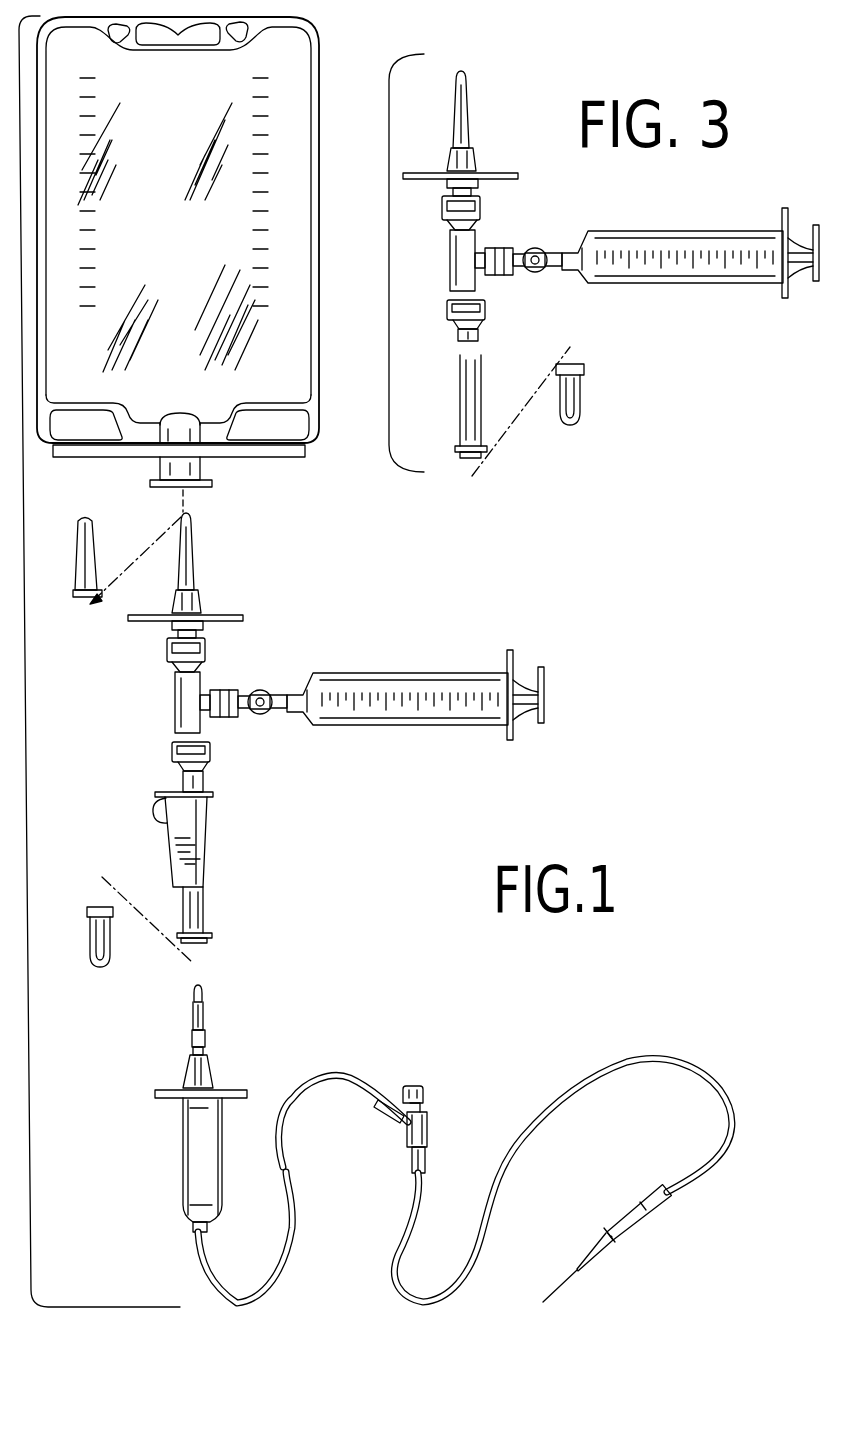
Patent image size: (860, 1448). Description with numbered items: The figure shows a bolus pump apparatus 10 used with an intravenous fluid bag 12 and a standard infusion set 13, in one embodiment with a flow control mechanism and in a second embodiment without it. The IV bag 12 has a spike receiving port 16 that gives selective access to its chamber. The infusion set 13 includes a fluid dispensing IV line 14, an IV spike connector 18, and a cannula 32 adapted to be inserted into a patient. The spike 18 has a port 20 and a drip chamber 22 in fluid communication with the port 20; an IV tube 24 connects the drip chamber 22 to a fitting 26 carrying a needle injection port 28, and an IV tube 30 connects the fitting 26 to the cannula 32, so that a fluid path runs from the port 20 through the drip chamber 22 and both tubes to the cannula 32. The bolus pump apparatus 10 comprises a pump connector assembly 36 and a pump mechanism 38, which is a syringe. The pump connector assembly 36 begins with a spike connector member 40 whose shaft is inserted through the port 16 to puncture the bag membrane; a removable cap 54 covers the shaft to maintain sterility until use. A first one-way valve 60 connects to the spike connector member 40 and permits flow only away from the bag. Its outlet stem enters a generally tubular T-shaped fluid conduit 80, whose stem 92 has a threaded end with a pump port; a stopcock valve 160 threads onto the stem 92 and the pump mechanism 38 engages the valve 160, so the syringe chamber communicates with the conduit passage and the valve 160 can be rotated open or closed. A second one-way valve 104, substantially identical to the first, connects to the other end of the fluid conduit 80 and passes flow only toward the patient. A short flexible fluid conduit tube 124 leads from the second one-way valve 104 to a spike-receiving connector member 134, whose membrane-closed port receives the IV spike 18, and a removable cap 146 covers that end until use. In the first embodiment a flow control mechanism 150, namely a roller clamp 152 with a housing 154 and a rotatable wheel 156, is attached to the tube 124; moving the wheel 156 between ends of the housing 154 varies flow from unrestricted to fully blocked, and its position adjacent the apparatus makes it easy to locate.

In FIG. 1, the bolus pump apparatus 10 is at (297, 776).
In FIG. 3, the bolus pump apparatus 10 is at (597, 318).
In FIG. 1, the IV fluid bag 12 is at (318, 256).
In FIG. 1, the infusion set 13 is at (487, 1050).
In FIG. 1, the fluid dispensing IV line 14 is at (497, 1100).
In FIG. 1, the spike receiving port 16 is at (211, 483).
In FIG. 1, the IV spike connector 18 is at (227, 1036).
In FIG. 1, the port 20 is at (203, 990).
In FIG. 1, the drip chamber 22 is at (183, 1179).
In FIG. 1, the IV tube 24 is at (289, 1141).
In FIG. 1, the fitting 26 is at (428, 1121).
In FIG. 1, the needle injection port 28 is at (416, 1083).
In FIG. 1, the IV tube 30 is at (540, 1136).
In FIG. 1, the cannula 32 is at (602, 1262).
In FIG. 1, the pump connector assembly 36 is at (122, 666).
In FIG. 1, the pump mechanism 38 is at (375, 727).
In FIG. 3, the pump mechanism 38 is at (682, 285).
In FIG. 1, the spike connector member 40 is at (202, 605).
In FIG. 3, the spike connector member 40 is at (470, 112).
In FIG. 1, the removable cap 54 is at (76, 560).
In FIG. 1, the first one-way valve 60 is at (168, 647).
In FIG. 3, the first one-way valve 60 is at (446, 207).
In FIG. 1, the fluid conduit 80 is at (175, 697).
In FIG. 3, the fluid conduit 80 is at (456, 264).
In FIG. 1, the stem 92 is at (204, 710).
In FIG. 1, the second one-way valve 104 is at (172, 748).
In FIG. 3, the second one-way valve 104 is at (451, 316).
In FIG. 1, the fluid conduit tube 124 is at (206, 908).
In FIG. 1, the spike-receiving connector member 134 is at (212, 938).
In FIG. 3, the spike-receiving connector member 134 is at (457, 448).
In FIG. 1, the removable cap 146 is at (91, 930).
In FIG. 3, the removable cap 146 is at (588, 373).
In FIG. 1, the flow control mechanism 150 is at (197, 840).
In FIG. 1, the roller clamp 152 is at (205, 848).
In FIG. 1, the housing 154 is at (198, 810).
In FIG. 1, the rotatable wheel 156 is at (153, 810).
In FIG. 1, the valve 160 is at (252, 679).
In FIG. 3, the valve 160 is at (537, 247).